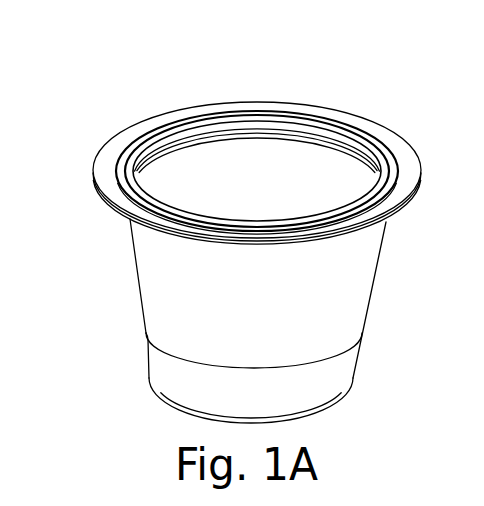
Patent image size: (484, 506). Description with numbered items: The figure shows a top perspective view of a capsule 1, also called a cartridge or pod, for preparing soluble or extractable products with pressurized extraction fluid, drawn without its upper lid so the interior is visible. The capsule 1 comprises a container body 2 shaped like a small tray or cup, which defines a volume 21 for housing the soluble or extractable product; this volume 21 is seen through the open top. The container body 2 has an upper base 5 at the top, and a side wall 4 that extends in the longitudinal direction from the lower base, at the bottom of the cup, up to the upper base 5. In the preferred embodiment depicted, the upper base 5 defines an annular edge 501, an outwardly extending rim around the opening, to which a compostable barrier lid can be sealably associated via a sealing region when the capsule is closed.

The capsule 1 is at (244, 227).
The container body 2 is at (260, 296).
The side wall 4 is at (370, 305).
The upper base 5 is at (248, 138).
The annular edge 501 is at (122, 129).
The volume 21 is at (268, 194).